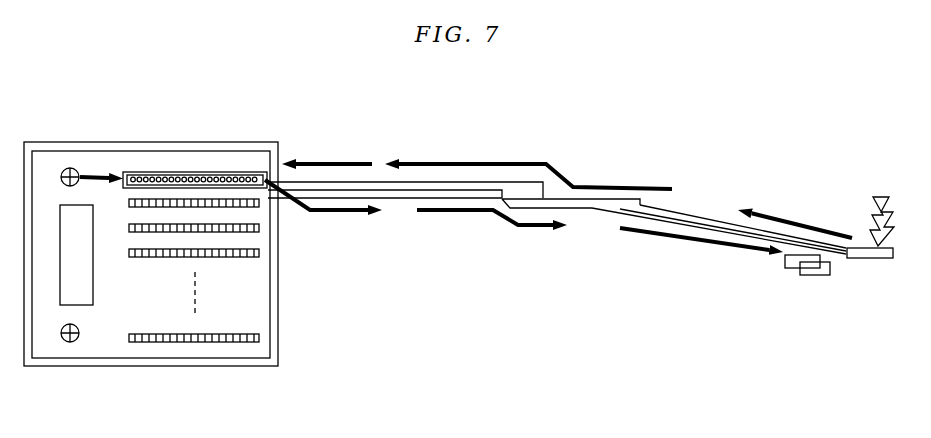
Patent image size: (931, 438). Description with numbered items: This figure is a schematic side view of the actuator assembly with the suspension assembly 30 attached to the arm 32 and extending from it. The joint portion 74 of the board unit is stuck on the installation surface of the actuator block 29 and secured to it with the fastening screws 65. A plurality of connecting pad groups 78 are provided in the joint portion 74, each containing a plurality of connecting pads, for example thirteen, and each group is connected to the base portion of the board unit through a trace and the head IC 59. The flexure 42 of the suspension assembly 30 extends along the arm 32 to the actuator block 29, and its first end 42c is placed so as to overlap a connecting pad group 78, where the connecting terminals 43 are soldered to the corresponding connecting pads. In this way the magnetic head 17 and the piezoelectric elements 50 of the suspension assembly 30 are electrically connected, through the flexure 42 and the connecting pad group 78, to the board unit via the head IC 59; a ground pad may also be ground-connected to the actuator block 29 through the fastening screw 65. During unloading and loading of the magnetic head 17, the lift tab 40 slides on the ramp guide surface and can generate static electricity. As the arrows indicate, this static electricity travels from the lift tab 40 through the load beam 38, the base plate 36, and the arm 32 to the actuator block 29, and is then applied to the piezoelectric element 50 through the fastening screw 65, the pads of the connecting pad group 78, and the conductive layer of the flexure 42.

The actuator block 29 is at (246, 367).
The joint portion 74 is at (263, 312).
The head IC 59 is at (84, 287).
The fastening screw 65 is at (70, 168).
The first end 42c is at (214, 160).
The connecting terminals 43 is at (195, 176).
The connecting pad group 78 is at (237, 206).
The arm 32 is at (455, 181).
The base plate 36 is at (617, 197).
The suspension assembly 30 is at (698, 192).
The flexure 42 is at (683, 230).
The load beam 38 is at (775, 232).
The piezoelectric element 50 is at (790, 268).
The magnetic head 17 is at (826, 275).
The lift tab 40 is at (870, 258).